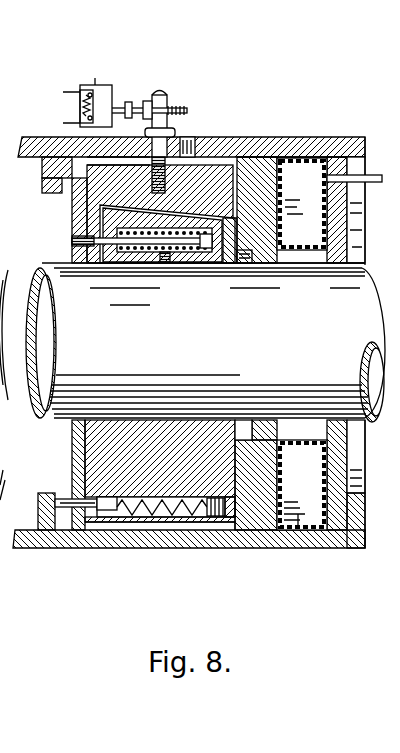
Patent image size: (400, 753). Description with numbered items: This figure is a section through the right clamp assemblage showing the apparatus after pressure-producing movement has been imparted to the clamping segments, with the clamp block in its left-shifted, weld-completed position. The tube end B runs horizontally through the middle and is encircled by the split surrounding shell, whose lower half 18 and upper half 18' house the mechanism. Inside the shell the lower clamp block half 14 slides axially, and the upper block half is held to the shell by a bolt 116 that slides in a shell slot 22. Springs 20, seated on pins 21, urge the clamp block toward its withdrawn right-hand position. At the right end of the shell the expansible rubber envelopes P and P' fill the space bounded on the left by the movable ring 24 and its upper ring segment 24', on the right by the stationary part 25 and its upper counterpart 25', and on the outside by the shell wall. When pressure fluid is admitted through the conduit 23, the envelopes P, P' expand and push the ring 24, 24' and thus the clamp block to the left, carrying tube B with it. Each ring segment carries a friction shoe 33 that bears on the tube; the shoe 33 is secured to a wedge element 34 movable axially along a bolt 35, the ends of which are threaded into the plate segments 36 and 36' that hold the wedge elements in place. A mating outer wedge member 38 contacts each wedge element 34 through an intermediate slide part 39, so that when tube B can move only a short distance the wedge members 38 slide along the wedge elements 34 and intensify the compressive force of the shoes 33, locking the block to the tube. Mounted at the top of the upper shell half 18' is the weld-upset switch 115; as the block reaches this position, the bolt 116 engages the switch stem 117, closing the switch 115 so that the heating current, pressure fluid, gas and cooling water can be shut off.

The upper shell half 18' is at (191, 151).
The shell slot 22 is at (193, 137).
The bolt 116 is at (184, 136).
The switch stem 117 is at (116, 107).
The weld-upset switch 115 is at (91, 86).
The upper plate segment 36' is at (54, 220).
The intermediate slide part 39 is at (173, 206).
The wedge element 34 is at (100, 222).
The friction shoe 33 is at (190, 265).
The bolt 35 is at (72, 239).
The outer wedge member 38 is at (228, 198).
The upper ring segment 24' is at (301, 186).
The upper expansible envelope P' is at (302, 179).
The conduit 23 is at (374, 175).
The upper stationary part 25' is at (182, 314).
The tube end B is at (52, 420).
The lower shell half 18 is at (189, 555).
The lower plate segment 36 is at (60, 475).
The lower clamp block half 14 is at (172, 470).
The pin 21 is at (63, 494).
The spring 20 is at (148, 522).
The ring 24 is at (300, 500).
The lower expansible envelope P is at (302, 510).
The stationary part 25 is at (9, 480).